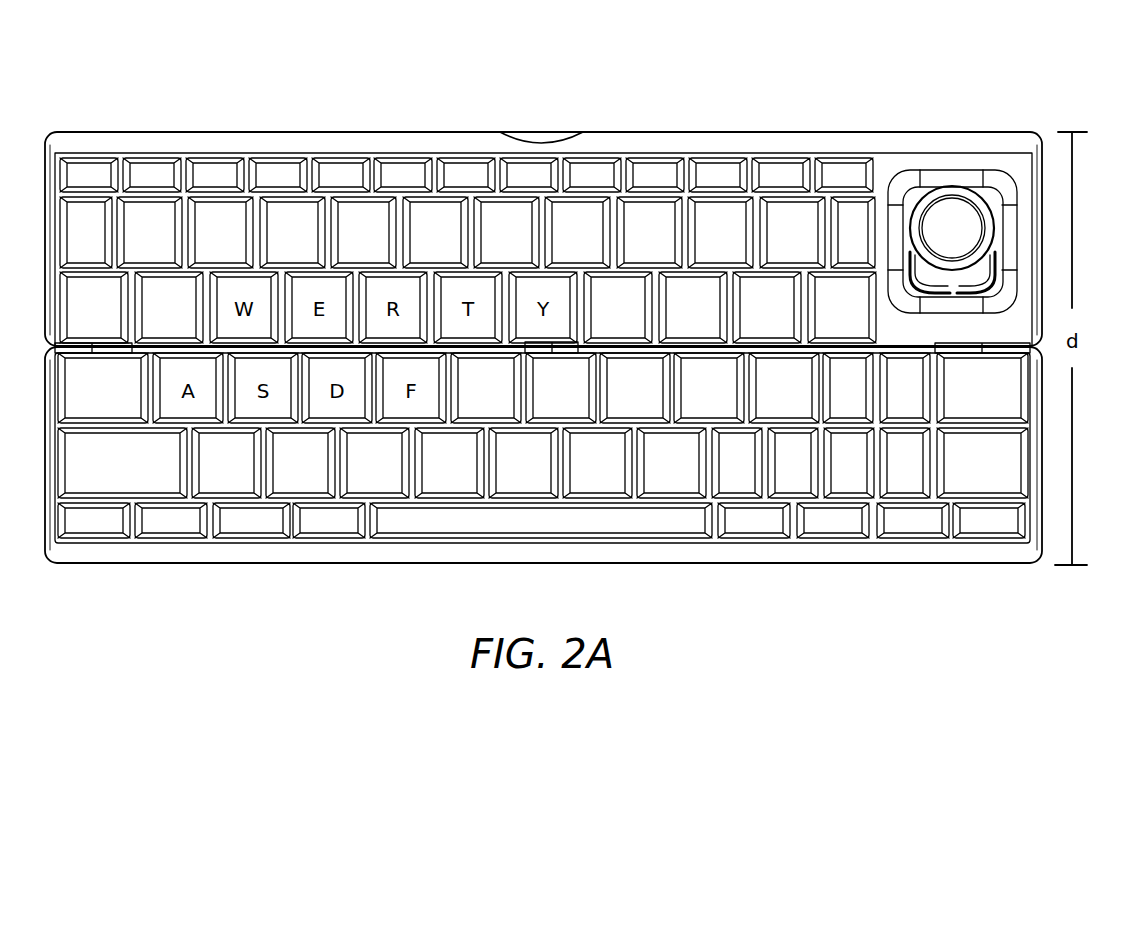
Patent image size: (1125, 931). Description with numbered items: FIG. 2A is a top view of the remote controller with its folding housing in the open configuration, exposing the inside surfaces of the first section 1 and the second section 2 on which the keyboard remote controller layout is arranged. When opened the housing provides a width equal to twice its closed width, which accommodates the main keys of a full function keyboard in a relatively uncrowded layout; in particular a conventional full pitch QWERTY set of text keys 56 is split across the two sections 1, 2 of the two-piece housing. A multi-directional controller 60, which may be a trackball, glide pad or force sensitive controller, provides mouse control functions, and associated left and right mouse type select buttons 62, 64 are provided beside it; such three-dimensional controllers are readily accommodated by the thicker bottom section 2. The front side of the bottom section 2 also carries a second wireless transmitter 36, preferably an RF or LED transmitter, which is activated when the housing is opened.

The top section 1 is at (45, 520).
The bottom section 2 is at (45, 180).
The second wireless transmitter 36 is at (568, 106).
The text keys 56 is at (180, 300).
The multi-directional controller 60 is at (952, 218).
The left mouse type select button 62 is at (913, 268).
The right mouse type select button 64 is at (983, 278).